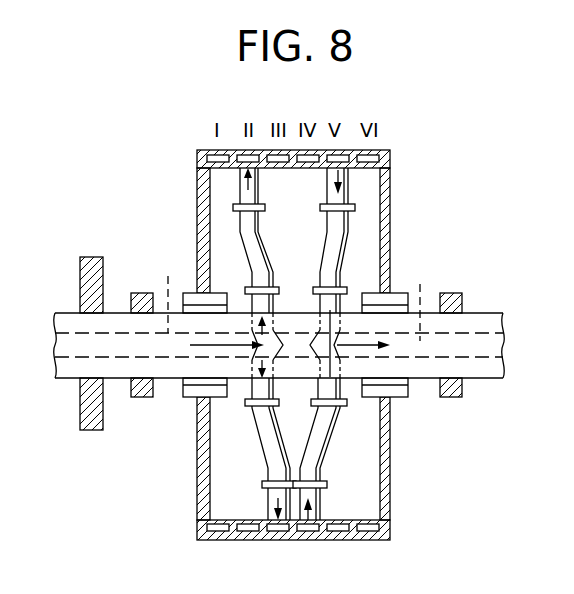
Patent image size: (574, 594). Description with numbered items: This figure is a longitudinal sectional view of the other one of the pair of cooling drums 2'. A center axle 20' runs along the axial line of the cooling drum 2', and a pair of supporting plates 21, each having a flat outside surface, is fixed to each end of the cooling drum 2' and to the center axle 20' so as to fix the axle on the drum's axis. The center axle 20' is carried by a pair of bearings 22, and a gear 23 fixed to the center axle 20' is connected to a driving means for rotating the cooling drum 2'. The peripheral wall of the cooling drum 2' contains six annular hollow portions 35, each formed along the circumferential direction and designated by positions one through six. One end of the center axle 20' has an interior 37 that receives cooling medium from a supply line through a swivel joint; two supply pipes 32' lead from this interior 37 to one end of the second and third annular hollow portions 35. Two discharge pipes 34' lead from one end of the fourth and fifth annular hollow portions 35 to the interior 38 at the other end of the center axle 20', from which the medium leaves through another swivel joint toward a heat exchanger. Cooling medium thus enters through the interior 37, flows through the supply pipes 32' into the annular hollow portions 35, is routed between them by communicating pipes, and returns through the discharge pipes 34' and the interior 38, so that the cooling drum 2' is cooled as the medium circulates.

The cooling drum 2' is at (293, 551).
The center axle 20' is at (279, 375).
The supporting plate 21 is at (197, 205).
The bearing 22 is at (140, 293).
The gear 23 is at (89, 257).
The supply pipe 32' is at (262, 344).
The discharge pipe 34' is at (326, 344).
The annular hollow portion 35 is at (203, 158).
The interior of one end side of the center axle 37 is at (172, 292).
The interior of the other end of the center axle 38 is at (416, 300).